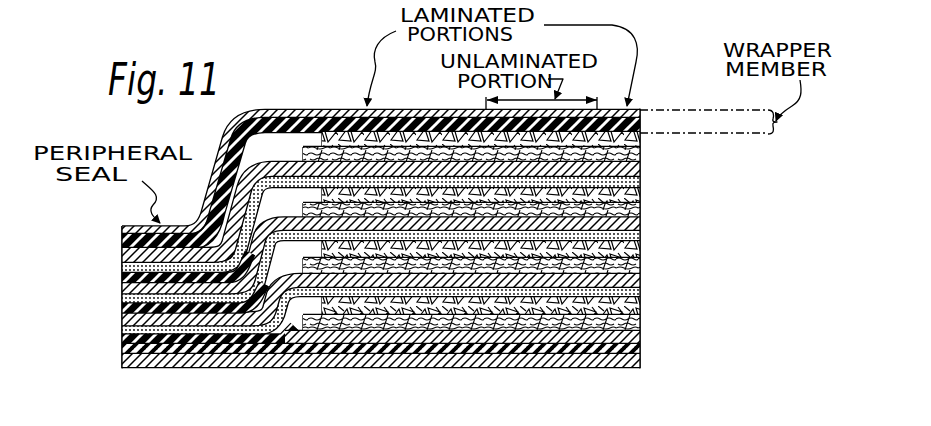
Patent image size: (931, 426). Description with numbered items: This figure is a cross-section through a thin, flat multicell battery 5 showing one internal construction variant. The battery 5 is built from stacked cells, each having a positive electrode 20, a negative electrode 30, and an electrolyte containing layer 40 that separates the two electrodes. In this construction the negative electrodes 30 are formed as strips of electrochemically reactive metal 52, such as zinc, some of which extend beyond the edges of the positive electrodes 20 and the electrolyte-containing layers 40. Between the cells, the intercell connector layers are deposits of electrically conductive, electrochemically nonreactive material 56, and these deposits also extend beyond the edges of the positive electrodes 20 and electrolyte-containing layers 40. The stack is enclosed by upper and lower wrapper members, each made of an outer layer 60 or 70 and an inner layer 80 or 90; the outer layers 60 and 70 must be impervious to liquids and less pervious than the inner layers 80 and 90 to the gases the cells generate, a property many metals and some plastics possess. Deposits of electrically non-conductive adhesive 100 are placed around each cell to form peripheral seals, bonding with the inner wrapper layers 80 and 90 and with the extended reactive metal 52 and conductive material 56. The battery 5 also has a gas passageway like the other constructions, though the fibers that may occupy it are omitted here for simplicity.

The battery 5 is at (292, 106).
The positive electrode 20 is at (637, 140).
The negative electrode 30 is at (638, 337).
The electrolyte containing layer 40 is at (648, 156).
The electrochemically reactive metal 52 is at (638, 170).
The electrically conductive, electrochemically nonreactive material 56 is at (648, 182).
The outer wrapper layer 60 is at (645, 113).
The outer wrapper layer 70 is at (644, 363).
The inner wrapper layer 80 is at (648, 128).
The inner wrapper layer 90 is at (648, 350).
The electrically non-conductive adhesive 100 is at (122, 280).